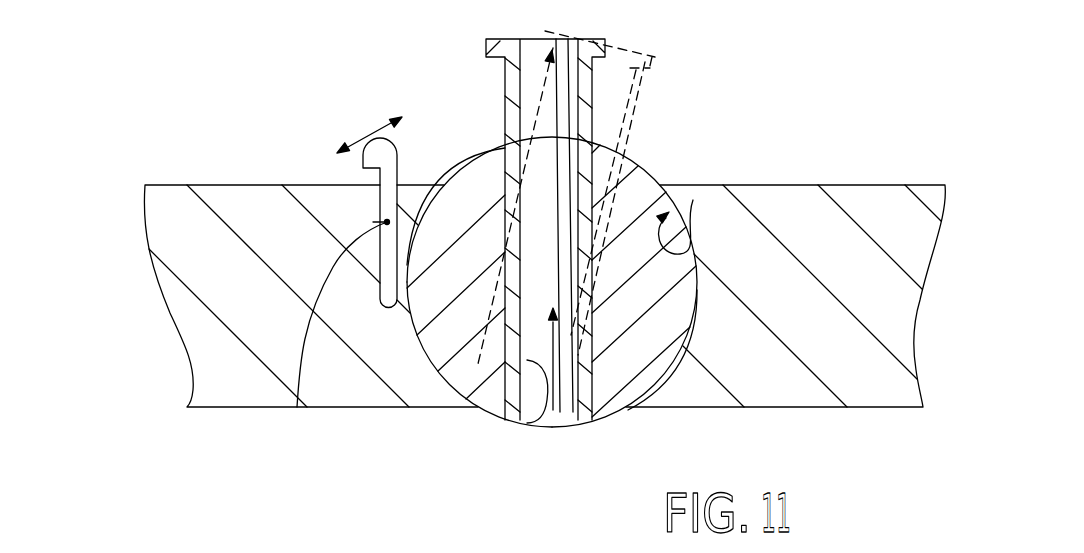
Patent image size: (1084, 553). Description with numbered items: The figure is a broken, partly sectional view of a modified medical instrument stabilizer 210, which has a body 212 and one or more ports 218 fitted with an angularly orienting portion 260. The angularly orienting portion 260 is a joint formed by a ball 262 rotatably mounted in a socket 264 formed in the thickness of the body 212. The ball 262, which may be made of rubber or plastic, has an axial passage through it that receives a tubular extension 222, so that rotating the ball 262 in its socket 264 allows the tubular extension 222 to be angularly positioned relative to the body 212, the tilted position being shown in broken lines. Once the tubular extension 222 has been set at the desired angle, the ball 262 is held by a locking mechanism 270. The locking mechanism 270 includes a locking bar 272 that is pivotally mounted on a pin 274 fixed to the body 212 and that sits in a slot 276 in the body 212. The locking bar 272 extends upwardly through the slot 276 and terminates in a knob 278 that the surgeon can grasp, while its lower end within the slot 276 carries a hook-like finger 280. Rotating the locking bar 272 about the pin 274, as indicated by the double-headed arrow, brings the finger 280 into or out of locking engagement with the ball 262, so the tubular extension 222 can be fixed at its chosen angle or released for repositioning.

The stabilizer 210 is at (900, 181).
The body 212 is at (850, 197).
The port 218 is at (587, 427).
The tubular extension 222 is at (527, 423).
The angularly orienting portion 260 is at (450, 173).
The ball 262 is at (642, 184).
The socket 264 is at (693, 200).
The locking mechanism 270 is at (297, 407).
The locking bar 272 is at (380, 200).
The pin 274 is at (378, 286).
The slot 276 is at (235, 207).
The knob 278 is at (370, 133).
The finger 280 is at (425, 318).